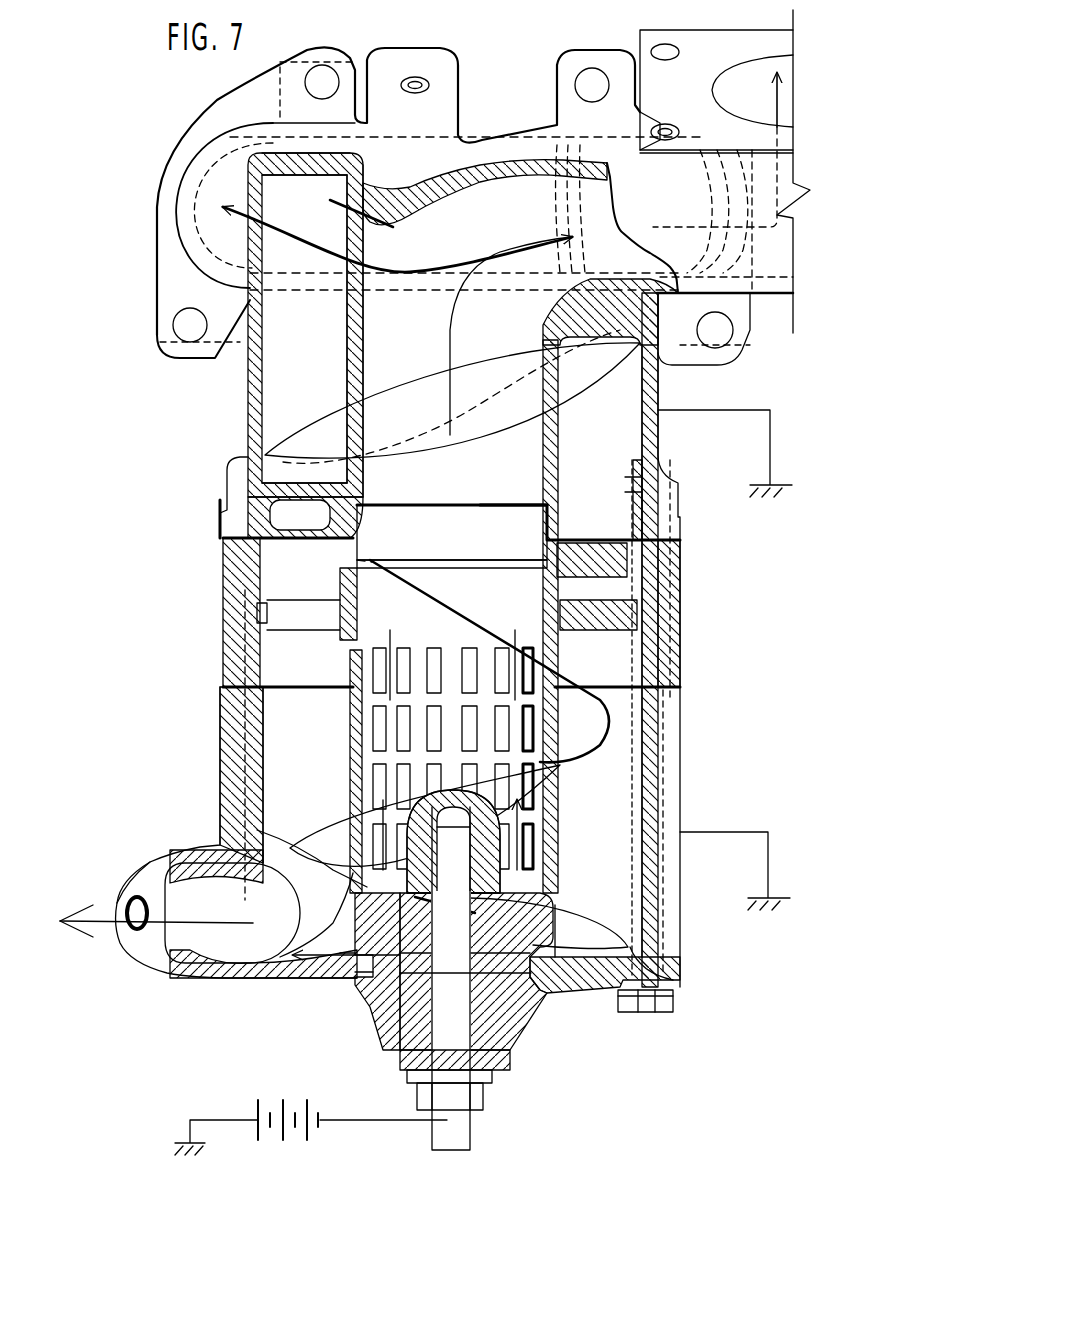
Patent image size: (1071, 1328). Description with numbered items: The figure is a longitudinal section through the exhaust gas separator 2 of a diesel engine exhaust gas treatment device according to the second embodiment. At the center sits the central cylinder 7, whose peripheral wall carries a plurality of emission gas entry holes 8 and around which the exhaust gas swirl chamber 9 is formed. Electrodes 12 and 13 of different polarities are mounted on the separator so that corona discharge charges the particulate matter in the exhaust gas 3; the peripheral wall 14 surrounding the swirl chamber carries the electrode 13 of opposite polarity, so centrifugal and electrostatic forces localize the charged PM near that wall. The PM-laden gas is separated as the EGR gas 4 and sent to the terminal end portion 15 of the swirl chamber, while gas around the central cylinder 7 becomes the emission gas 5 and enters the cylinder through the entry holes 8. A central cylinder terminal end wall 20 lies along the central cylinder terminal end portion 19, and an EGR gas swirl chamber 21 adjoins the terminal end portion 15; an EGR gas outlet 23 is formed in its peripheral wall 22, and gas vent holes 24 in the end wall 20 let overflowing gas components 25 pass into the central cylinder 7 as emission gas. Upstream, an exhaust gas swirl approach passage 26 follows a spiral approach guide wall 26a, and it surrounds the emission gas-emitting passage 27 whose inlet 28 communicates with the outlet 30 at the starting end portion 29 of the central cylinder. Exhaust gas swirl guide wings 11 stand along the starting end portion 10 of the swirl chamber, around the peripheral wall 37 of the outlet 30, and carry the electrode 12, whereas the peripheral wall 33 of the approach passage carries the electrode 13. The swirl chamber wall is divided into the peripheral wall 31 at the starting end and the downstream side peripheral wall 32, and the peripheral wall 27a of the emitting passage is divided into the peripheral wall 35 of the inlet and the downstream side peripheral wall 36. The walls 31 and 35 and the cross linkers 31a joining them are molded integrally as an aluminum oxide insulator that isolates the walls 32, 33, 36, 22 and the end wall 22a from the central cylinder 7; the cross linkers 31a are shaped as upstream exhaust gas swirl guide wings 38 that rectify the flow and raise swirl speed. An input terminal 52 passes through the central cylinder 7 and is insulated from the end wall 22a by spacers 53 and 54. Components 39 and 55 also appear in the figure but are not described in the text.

The exhaust gas separator 2 is at (690, 588).
The exhaust gas 3 is at (270, 500).
The EGR gas 4 is at (197, 922).
The emission gas 5 is at (780, 85).
The central cylinder 7 is at (560, 822).
The emission gas entry holes 8 is at (353, 733).
The exhaust gas swirl chamber 9 is at (613, 837).
The starting end portion 10 is at (600, 635).
The exhaust gas swirl guide wings 11 is at (600, 615).
The electrode 12 is at (677, 628).
The electrode 13 is at (722, 453).
The peripheral wall 14 is at (693, 640).
The terminal end portion 15 is at (617, 893).
The central cylinder terminal end portion 19 is at (362, 877).
The central cylinder terminal end wall 20 is at (300, 943).
The EGR gas swirl chamber 21 is at (585, 943).
The peripheral wall 22 is at (650, 937).
The end wall 22a is at (597, 980).
The EGR gas outlet 23 is at (207, 947).
The gas vent holes 24 is at (405, 845).
The gas components 25 is at (350, 920).
The exhaust gas swirl approach passage 26 is at (278, 403).
The approach guide wall 26a is at (340, 472).
The emission gas-emitting passage 27 is at (383, 383).
The peripheral wall 27a is at (375, 335).
The inlet 28 is at (550, 500).
The starting end portion 29 is at (430, 573).
The outlet 30 is at (453, 573).
The peripheral wall 31 is at (680, 607).
The cross linkers 31a is at (647, 560).
The downstream side peripheral wall 32 is at (650, 780).
The peripheral wall 33 is at (652, 447).
The peripheral wall 35 is at (548, 560).
The downstream side peripheral wall 36 is at (550, 440).
The peripheral wall 37 is at (545, 600).
The upstream exhaust gas swirl guide wings 38 is at (441, 700).
The exhaust manifold pipe 39 is at (762, 295).
The input terminal 52 is at (457, 1007).
The spacer 53 is at (520, 963).
The spacer 54 is at (520, 1013).
The power supply 55 is at (285, 1097).